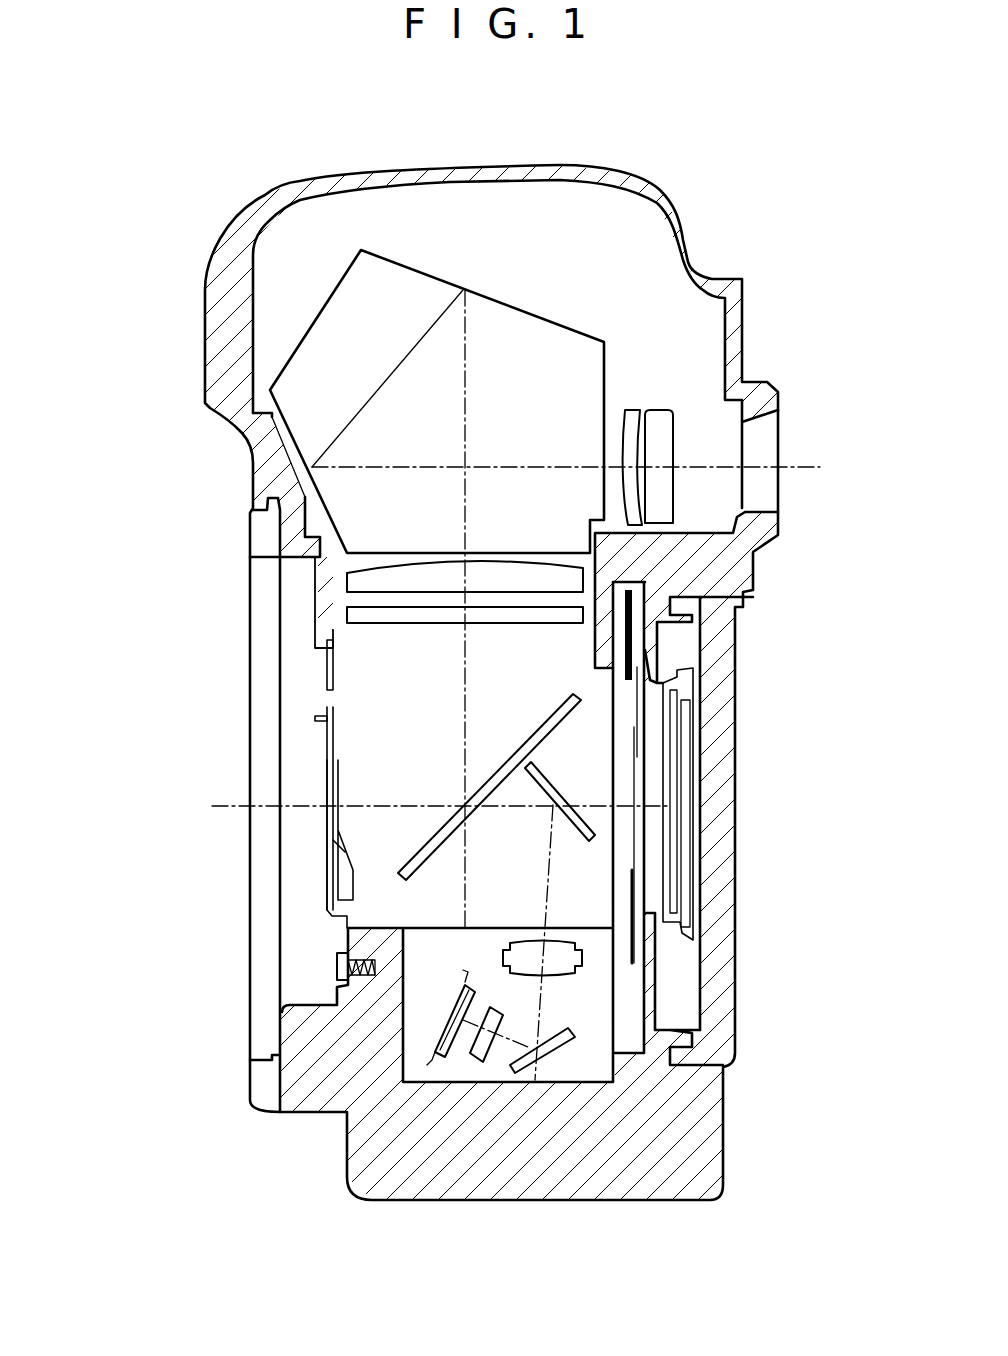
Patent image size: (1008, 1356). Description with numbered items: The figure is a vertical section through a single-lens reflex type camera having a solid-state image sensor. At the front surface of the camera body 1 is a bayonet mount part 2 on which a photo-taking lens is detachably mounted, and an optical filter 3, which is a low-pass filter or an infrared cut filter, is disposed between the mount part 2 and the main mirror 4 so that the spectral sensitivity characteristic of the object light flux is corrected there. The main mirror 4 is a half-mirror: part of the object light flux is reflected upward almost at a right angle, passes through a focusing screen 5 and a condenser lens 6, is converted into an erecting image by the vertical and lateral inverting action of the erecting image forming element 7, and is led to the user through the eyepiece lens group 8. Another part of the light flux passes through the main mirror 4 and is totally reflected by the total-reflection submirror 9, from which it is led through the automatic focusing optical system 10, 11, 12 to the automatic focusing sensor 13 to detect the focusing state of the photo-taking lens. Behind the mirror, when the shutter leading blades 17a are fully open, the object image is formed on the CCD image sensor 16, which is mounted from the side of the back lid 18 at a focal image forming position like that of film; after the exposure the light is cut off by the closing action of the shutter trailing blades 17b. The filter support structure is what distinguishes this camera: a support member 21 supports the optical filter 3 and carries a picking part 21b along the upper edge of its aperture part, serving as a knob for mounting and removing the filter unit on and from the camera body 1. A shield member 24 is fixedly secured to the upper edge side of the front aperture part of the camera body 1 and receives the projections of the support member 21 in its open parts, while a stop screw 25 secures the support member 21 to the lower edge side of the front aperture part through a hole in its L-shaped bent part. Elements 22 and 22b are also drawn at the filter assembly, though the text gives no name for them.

The camera body 1 is at (737, 572).
The bayonet mount part 2 is at (265, 1095).
The optical filter 3 is at (333, 758).
The main mirror 4 is at (440, 847).
The focusing screen 5 is at (400, 613).
The condenser lens 6 is at (352, 580).
The erecting image forming element 7 is at (313, 369).
The eyepiece lens group 8 is at (620, 402).
The total-reflection submirror 9 is at (573, 832).
The automatic focusing optical system element 10 is at (557, 963).
The automatic focusing optical system element 11 is at (535, 1068).
The automatic focusing optical system element 12 is at (473, 1060).
The automatic focusing sensor 13 is at (445, 1058).
The CCD image sensor 16 is at (680, 707).
The shutter leading blades 17a is at (632, 883).
The shutter trailing blades 17b is at (640, 653).
The back lid 18 is at (718, 782).
The support member 21 is at (320, 733).
The picking part 21b is at (317, 718).
The polarizing plate 22 is at (320, 888).
The plate edge 22b is at (345, 852).
The shield member 24 is at (317, 632).
The stop screw 25 is at (337, 965).